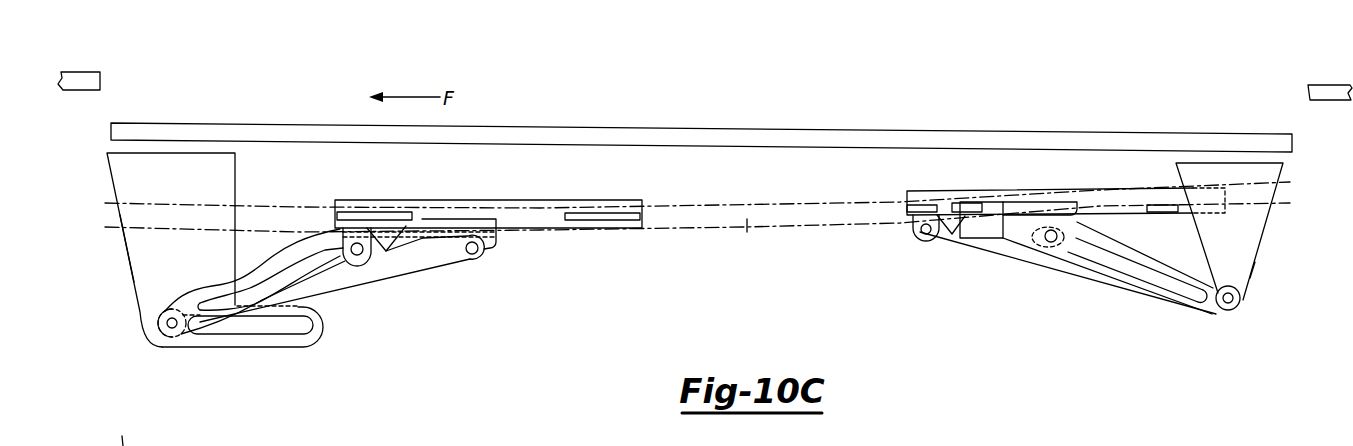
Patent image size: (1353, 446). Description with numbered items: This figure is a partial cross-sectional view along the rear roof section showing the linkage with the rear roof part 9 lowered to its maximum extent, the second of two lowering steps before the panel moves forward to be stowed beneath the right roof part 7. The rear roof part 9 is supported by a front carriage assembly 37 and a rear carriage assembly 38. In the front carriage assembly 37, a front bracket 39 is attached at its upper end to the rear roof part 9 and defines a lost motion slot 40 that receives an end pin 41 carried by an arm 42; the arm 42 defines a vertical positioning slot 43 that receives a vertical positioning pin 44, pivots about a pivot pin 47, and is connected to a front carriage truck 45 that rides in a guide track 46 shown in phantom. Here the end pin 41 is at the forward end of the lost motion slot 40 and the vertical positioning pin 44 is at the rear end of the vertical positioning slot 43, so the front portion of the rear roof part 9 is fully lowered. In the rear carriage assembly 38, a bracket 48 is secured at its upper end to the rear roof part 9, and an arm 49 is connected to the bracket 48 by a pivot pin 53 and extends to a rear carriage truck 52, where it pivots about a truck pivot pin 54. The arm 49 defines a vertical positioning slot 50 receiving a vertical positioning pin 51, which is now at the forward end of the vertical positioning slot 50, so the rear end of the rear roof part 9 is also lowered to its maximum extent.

The right roof part 7 is at (81, 77).
The rear roof part 9 is at (590, 128).
The front carriage assembly 37 is at (110, 193).
The rear carriage assembly 38 is at (1272, 237).
The front bracket 39 is at (128, 273).
The lost motion slot 40 is at (252, 324).
The end pin 41 is at (175, 335).
The arm 42 is at (455, 264).
The vertical positioning slot 43 is at (318, 258).
The vertical positioning pin 44 is at (372, 253).
The front carriage truck 45 is at (510, 215).
The guide track 46 is at (748, 234).
The pivot pin 47 is at (480, 253).
The bracket 48 is at (1253, 279).
The arm 49 is at (1108, 290).
The vertical positioning slot 50 is at (1112, 262).
The vertical positioning pin 51 is at (1046, 248).
The rear carriage truck 52 is at (1113, 200).
The pivot pin 53 is at (1224, 310).
The truck pivot pin 54 is at (925, 237).